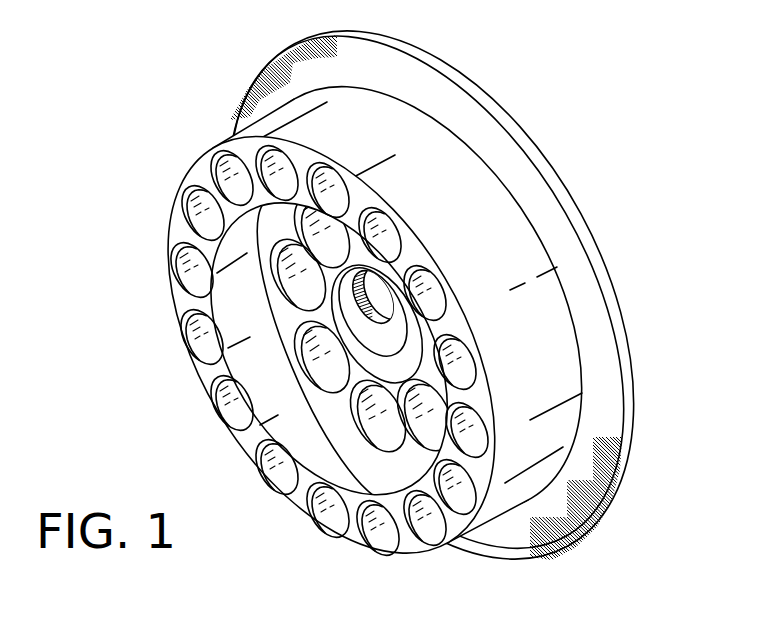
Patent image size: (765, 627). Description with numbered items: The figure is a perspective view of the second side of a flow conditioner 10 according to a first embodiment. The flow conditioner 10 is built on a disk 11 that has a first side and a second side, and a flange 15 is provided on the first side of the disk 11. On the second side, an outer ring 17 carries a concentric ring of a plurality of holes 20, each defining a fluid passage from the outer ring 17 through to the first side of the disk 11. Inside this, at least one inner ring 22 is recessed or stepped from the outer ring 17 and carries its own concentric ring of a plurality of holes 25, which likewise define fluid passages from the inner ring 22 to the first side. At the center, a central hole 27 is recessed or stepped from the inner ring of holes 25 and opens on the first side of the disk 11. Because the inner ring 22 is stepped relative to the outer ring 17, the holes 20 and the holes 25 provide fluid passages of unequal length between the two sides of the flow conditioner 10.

The flow conditioner 10 is at (418, 313).
The disk 11 is at (543, 353).
The flange 15 is at (608, 268).
The outer ring 17 is at (200, 370).
The holes 20 is at (173, 277).
The inner ring 22 is at (277, 218).
The holes 25 is at (380, 437).
The central hole 27 is at (400, 316).